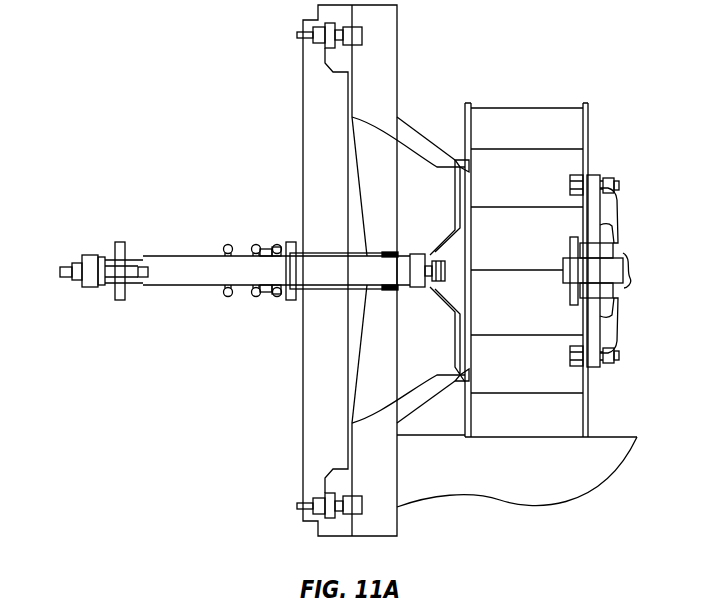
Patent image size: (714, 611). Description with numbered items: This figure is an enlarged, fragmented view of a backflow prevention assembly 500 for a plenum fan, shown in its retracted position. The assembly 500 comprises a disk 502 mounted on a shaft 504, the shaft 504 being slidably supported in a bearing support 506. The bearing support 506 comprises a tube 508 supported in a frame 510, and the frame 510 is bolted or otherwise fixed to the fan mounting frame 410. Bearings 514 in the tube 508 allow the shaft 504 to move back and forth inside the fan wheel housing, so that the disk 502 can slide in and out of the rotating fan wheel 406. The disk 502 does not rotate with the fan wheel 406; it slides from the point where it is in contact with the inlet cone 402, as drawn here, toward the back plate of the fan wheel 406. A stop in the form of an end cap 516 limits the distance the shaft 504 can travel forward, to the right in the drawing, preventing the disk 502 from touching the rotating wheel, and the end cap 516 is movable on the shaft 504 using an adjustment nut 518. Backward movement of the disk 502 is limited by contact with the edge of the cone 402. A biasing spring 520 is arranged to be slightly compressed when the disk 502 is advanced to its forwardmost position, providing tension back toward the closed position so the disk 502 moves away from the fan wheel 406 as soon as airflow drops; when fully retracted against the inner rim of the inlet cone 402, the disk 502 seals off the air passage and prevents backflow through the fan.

The inlet cone 402 is at (348, 400).
The fan wheel 406 is at (510, 432).
The mounting frame 410 is at (388, 477).
The backflow prevention assembly 500 is at (176, 287).
The disk 502 is at (443, 303).
The shaft 504 is at (177, 257).
The bearing support 506 is at (322, 250).
The tube 508 is at (348, 250).
The frame 510 is at (308, 378).
The bearings 514 is at (272, 252).
The end cap 516 is at (138, 292).
The adjustment nut 518 is at (82, 262).
The spring 520 is at (223, 296).